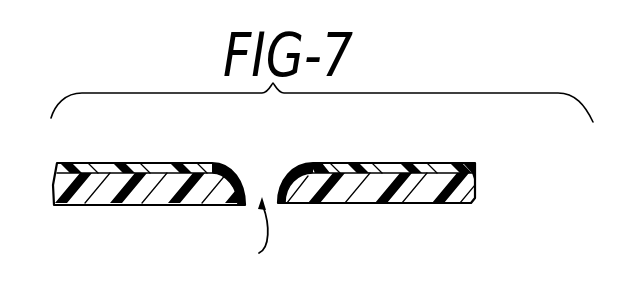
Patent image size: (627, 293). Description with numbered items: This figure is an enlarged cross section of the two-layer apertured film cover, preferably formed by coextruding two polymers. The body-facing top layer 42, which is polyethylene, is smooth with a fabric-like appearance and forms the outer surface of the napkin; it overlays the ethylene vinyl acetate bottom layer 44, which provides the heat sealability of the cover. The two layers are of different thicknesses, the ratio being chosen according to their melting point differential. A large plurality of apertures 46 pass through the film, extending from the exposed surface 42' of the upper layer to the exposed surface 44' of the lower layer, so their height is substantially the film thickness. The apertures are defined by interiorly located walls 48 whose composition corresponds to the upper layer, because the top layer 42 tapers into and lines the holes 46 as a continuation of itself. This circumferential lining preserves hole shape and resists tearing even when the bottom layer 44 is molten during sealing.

The top layer 42 is at (266, 157).
The exposed surface of upper layer 42' is at (266, 138).
The bottom layer 44 is at (264, 212).
The exposed surface of lower layer 44' is at (294, 220).
The apertures 46 is at (248, 232).
The interiorly located walls 48 is at (289, 177).